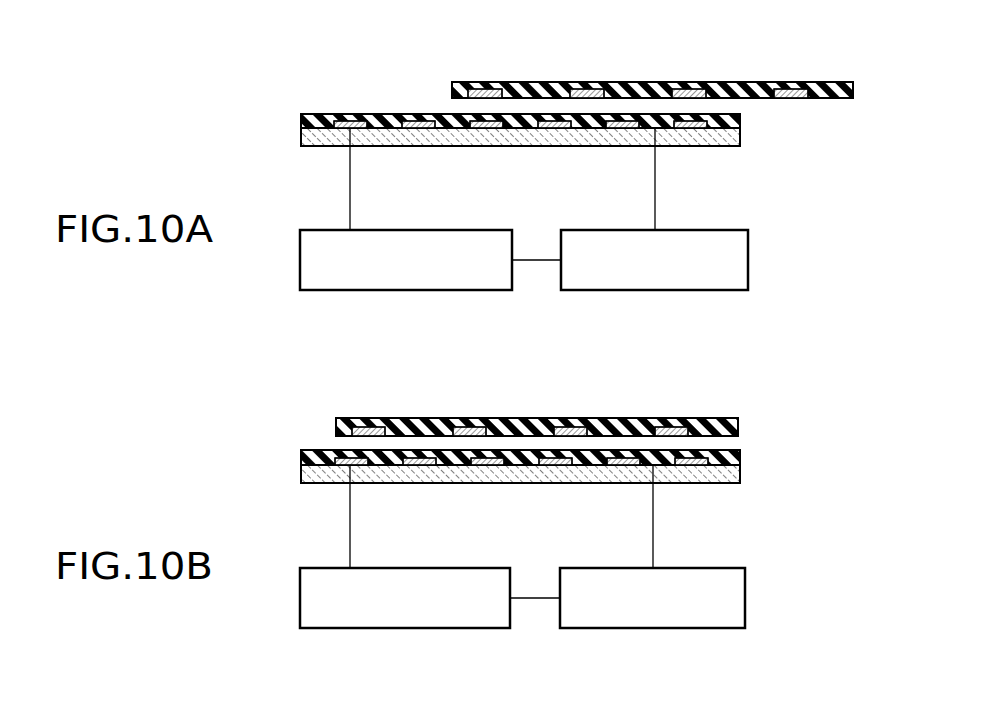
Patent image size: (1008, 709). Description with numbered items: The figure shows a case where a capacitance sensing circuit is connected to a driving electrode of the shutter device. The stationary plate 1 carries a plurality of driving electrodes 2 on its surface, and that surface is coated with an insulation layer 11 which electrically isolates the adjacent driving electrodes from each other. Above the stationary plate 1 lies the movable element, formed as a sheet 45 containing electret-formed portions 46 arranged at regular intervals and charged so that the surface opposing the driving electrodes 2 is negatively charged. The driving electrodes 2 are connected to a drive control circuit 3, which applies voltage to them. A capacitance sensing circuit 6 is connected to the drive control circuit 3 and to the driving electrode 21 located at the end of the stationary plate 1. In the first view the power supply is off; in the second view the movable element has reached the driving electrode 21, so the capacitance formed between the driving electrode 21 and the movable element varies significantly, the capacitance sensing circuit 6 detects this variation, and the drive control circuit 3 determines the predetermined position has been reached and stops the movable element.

In FIG. 10A, the stationary plate 1 is at (740, 140).
In FIG. 10B, the stationary plate 1 is at (740, 476).
In FIG. 10A, the insulation layer 11 is at (740, 121).
In FIG. 10B, the insulation layer 11 is at (740, 458).
In FIG. 10A, the driving electrode 21 is at (348, 114).
In FIG. 10B, the driving electrode 21 is at (340, 451).
In FIG. 10A, the driving electrodes 2 is at (416, 114).
In FIG. 10B, the driving electrodes 2 is at (416, 451).
In FIG. 10A, the sheet 45 is at (626, 82).
In FIG. 10B, the sheet 45 is at (503, 418).
In FIG. 10A, the electret-formed portions 46 is at (693, 89).
In FIG. 10B, the electret-formed portions 46 is at (572, 428).
In FIG. 10A, the capacitance sensing circuit 6 is at (444, 230).
In FIG. 10B, the capacitance sensing circuit 6 is at (444, 568).
In FIG. 10A, the drive control circuit 3 is at (706, 230).
In FIG. 10B, the drive control circuit 3 is at (706, 568).